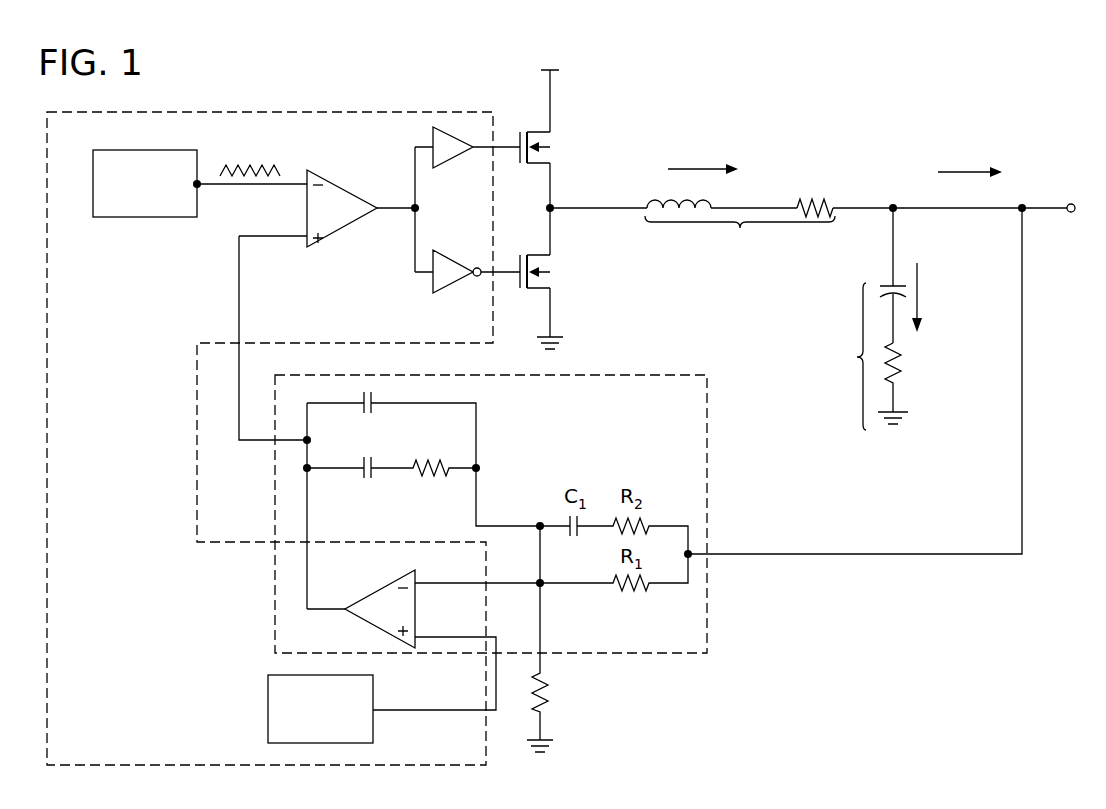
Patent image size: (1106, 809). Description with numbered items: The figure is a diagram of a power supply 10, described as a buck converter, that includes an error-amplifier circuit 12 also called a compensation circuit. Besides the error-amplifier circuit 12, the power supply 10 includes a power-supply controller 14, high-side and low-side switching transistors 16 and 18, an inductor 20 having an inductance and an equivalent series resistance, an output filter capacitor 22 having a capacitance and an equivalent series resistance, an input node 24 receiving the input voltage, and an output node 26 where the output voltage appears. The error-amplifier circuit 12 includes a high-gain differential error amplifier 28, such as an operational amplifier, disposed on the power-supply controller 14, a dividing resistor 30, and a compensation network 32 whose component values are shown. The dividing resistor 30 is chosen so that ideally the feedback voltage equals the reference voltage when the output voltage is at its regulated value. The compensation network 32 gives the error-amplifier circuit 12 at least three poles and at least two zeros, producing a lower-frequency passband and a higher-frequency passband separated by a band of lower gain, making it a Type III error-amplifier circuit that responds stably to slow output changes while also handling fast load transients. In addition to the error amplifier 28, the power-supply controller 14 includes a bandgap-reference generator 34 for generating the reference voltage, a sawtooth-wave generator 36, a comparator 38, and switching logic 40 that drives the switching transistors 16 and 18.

The power supply 10 is at (712, 65).
The error-amplifier circuit 12 is at (640, 655).
The power-supply controller 14 is at (276, 112).
The high-side switching transistor 16 is at (553, 147).
The low-side switching transistor 18 is at (553, 272).
The inductor 20 is at (740, 197).
The output capacitor 22 is at (890, 319).
The input node 24 is at (548, 88).
The output node 26 is at (1048, 207).
The error amplifier 28 is at (378, 590).
The dividing resistor 30 is at (548, 683).
The compensation network 32 is at (528, 437).
The bandgap-reference generator 34 is at (268, 727).
The sawtooth-wave generator 36 is at (145, 217).
The comparator 38 is at (343, 188).
The switching logic 40 is at (368, 279).